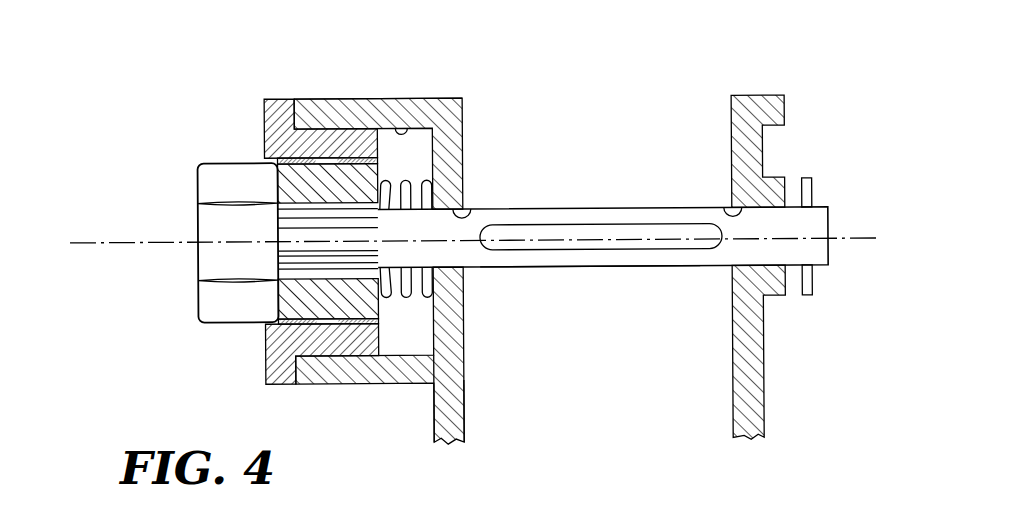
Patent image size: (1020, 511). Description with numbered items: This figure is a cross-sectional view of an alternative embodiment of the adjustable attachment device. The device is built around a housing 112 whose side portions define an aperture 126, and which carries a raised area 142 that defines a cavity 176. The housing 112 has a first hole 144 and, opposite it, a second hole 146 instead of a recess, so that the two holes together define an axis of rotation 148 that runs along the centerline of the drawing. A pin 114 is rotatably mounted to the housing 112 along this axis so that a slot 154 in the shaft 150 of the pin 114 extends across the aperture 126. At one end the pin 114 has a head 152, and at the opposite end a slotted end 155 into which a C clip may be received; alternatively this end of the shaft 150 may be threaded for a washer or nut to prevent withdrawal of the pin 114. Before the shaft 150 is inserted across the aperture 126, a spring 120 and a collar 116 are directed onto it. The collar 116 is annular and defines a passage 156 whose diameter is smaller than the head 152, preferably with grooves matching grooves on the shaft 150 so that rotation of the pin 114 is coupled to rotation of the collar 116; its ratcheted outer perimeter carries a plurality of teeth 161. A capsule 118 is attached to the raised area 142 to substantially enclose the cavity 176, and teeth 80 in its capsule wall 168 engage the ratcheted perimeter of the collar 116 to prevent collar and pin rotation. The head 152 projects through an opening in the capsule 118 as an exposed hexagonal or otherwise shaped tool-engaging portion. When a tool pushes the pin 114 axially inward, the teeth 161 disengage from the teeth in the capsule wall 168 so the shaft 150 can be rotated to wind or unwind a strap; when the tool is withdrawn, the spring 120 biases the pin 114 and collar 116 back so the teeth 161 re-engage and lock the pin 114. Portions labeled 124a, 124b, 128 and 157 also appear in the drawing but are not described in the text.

The capsule 118 is at (257, 125).
The raised area 142 is at (368, 98).
The cavity 176 is at (408, 128).
The spring 120 is at (413, 301).
The teeth 80 is at (311, 128).
The collar 116 is at (289, 325).
The capsule wall 168 is at (278, 160).
The lower seal strip 128 is at (275, 320).
The head 152 is at (198, 188).
The passage 156 is at (307, 203).
The teeth 161 is at (288, 293).
The pin 114 is at (634, 208).
The shaft 150 is at (565, 269).
The first hole 144 is at (475, 209).
The second hole 146 is at (733, 209).
The slot 154 is at (656, 249).
The axis of rotation 148 is at (852, 238).
The housing 112 is at (769, 96).
The flange lower leg 124b is at (764, 403).
The housing lower leg 124a is at (433, 414).
The aperture 126 is at (465, 420).
The slotted end 155 is at (813, 200).
The snap ring lower 157 is at (813, 277).